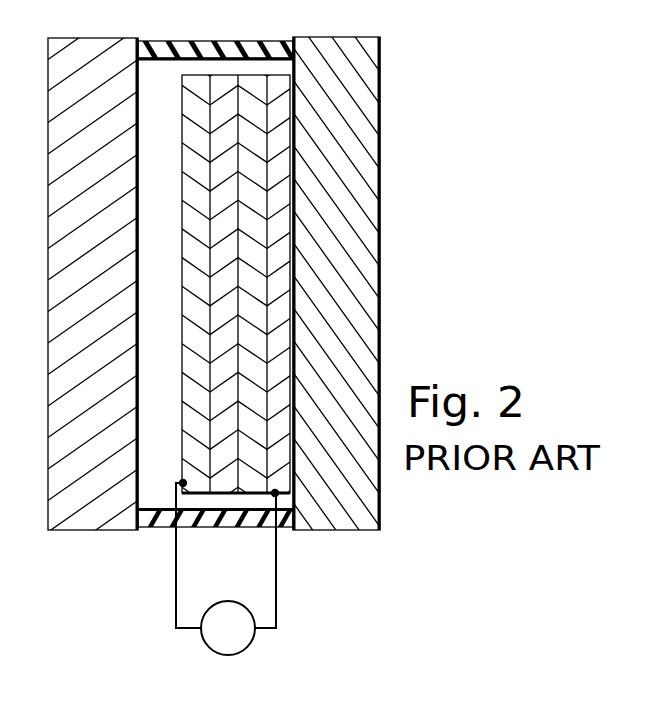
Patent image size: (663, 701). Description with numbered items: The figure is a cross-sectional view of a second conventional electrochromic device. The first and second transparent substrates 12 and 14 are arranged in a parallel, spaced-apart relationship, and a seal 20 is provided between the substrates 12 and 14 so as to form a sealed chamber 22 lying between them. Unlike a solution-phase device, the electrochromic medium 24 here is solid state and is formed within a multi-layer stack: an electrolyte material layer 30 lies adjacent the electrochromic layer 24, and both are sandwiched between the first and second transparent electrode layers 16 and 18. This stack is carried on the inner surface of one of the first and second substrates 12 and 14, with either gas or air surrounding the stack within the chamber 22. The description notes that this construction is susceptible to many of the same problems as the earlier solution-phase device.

The first transparent substrate 12 is at (372, 78).
The second transparent substrate 14 is at (58, 128).
The first transparent electrode layer 16 is at (284, 478).
The second transparent electrode layer 18 is at (200, 478).
The seal 20 is at (262, 44).
The sealed chamber 22 is at (161, 66).
The electrochromic medium 24 is at (258, 480).
The electrolyte material layer 30 is at (224, 480).